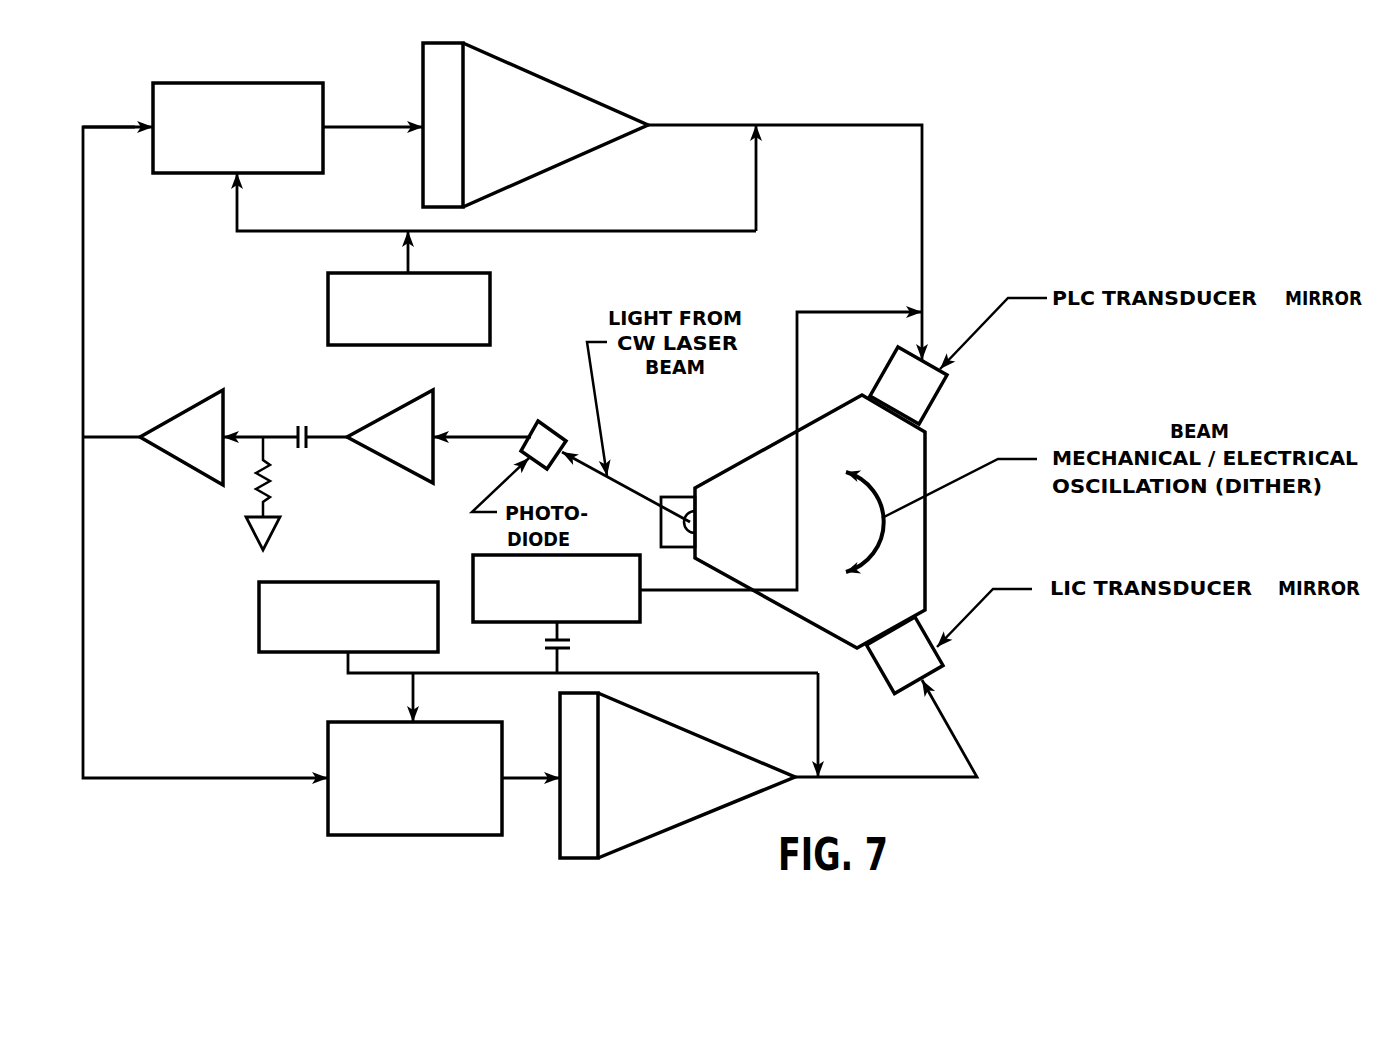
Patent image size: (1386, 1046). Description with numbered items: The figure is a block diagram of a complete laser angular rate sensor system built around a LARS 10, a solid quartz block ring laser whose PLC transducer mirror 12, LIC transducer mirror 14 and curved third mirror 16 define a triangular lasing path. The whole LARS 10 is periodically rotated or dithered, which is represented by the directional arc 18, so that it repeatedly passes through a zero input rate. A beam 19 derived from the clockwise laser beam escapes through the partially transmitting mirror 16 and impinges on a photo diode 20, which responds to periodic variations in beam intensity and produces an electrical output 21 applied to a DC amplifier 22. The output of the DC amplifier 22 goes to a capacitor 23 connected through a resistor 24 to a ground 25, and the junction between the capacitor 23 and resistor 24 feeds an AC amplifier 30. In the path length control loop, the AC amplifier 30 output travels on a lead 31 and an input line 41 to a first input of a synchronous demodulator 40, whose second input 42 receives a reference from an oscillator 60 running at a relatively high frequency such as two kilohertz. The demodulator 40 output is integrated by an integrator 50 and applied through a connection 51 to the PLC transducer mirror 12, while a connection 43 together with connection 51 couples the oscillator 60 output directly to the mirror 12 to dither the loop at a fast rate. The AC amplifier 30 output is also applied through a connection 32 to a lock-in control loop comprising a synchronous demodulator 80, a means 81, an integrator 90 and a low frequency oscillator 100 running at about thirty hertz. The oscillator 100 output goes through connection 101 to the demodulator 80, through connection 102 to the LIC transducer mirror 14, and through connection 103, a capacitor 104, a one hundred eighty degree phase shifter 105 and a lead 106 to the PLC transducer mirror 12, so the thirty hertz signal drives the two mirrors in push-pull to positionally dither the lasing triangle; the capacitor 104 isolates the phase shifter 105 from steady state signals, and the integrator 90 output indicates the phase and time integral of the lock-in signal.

The LARS 10 is at (780, 433).
The PLC transducer mirror 12 is at (940, 396).
The LIC transducer mirror 14 is at (947, 654).
The third mirror 16 is at (676, 497).
The directional arc 18 is at (873, 548).
The beam 19 is at (632, 490).
The photo diode 20 is at (552, 420).
The electrical output 21 is at (483, 434).
The DC amplifier 22 is at (383, 413).
The capacitor 23 is at (305, 425).
The resistor 24 is at (270, 472).
The ground 25 is at (277, 530).
The AC amplifier 30 is at (167, 416).
The lead 31 is at (85, 238).
The connection 32 is at (85, 590).
The synchronous demodulator 40 is at (213, 83).
The input line to synchronous demodulator 40 41 is at (106, 126).
The second input 42 is at (238, 207).
The connection 43 is at (757, 186).
The integrator 50 is at (548, 78).
The connection 51 is at (924, 186).
The oscillator 60 is at (490, 313).
The synchronous demodulator 80 is at (442, 722).
The means 81 is at (523, 775).
The integrator 90 is at (668, 722).
The oscillator 100 is at (388, 582).
The connection 101 is at (412, 692).
The connection 102 is at (819, 727).
The connection 103 is at (571, 657).
The capacitor 104 is at (545, 653).
The 180 degree phase shifter 105 is at (642, 611).
The lead 106 is at (842, 311).